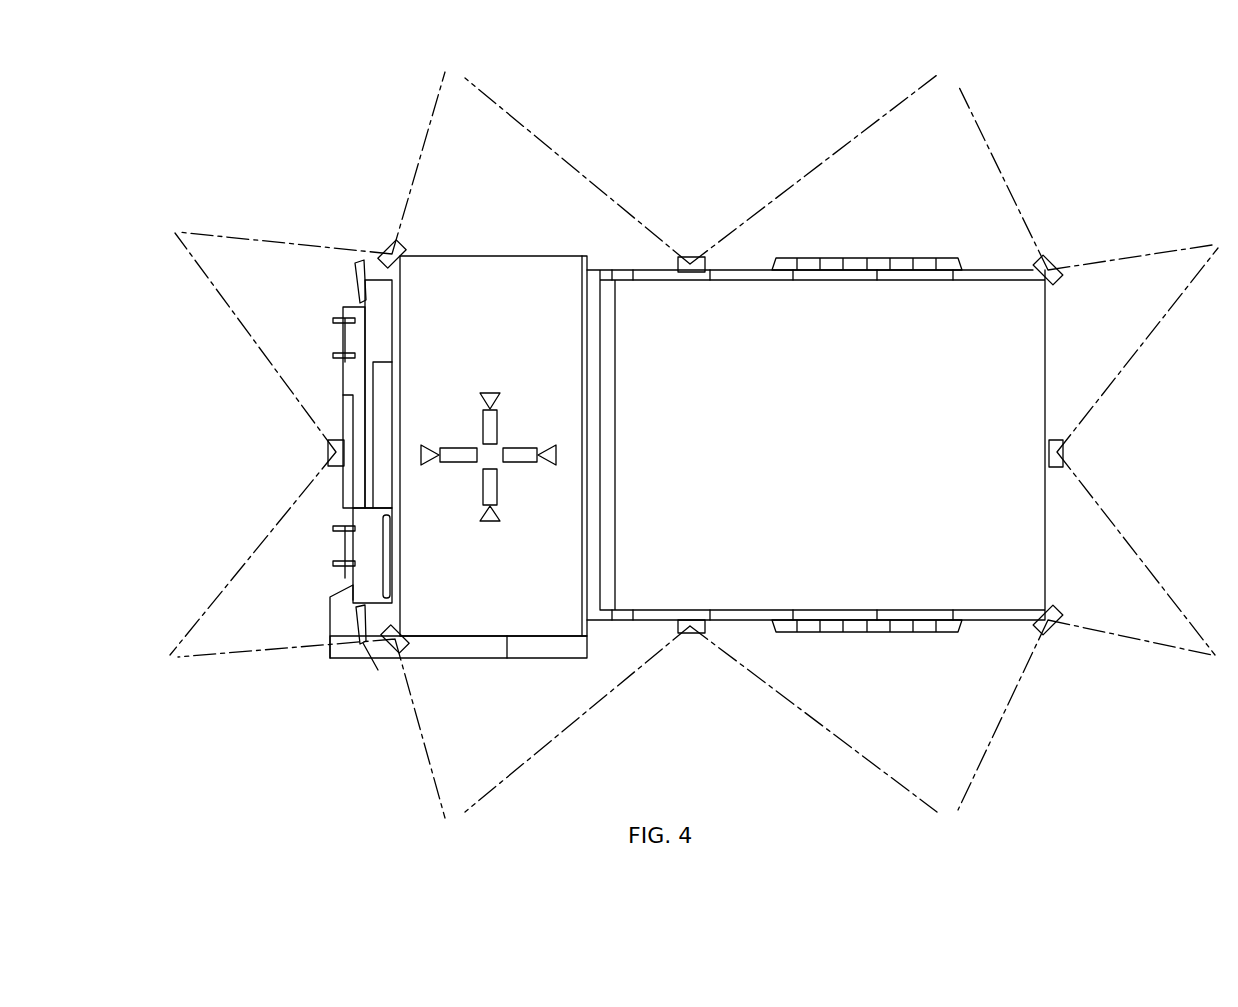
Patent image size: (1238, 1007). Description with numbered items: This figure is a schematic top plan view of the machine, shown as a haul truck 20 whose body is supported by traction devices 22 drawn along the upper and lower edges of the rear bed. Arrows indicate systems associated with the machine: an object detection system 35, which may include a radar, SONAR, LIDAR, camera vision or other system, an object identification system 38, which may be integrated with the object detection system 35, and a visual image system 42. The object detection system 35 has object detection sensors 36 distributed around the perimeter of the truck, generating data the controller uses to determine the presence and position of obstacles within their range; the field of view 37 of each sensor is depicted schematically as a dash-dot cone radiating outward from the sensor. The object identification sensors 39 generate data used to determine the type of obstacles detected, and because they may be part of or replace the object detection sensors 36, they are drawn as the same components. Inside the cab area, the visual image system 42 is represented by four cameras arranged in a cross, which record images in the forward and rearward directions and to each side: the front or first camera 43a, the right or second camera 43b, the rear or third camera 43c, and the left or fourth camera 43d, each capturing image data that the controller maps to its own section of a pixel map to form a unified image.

The haul truck 20 is at (349, 128).
The traction devices 22 is at (860, 256).
The object detection system 35 is at (277, 189).
The object detection sensors 36 is at (410, 252).
The field of view 37 is at (414, 176).
The object identification system 38 is at (236, 191).
The object identification sensors 39 is at (695, 446).
The visual image system 42 is at (311, 187).
The first camera 43a is at (455, 465).
The second camera 43b is at (480, 412).
The third camera 43c is at (518, 446).
The fourth camera 43d is at (498, 485).